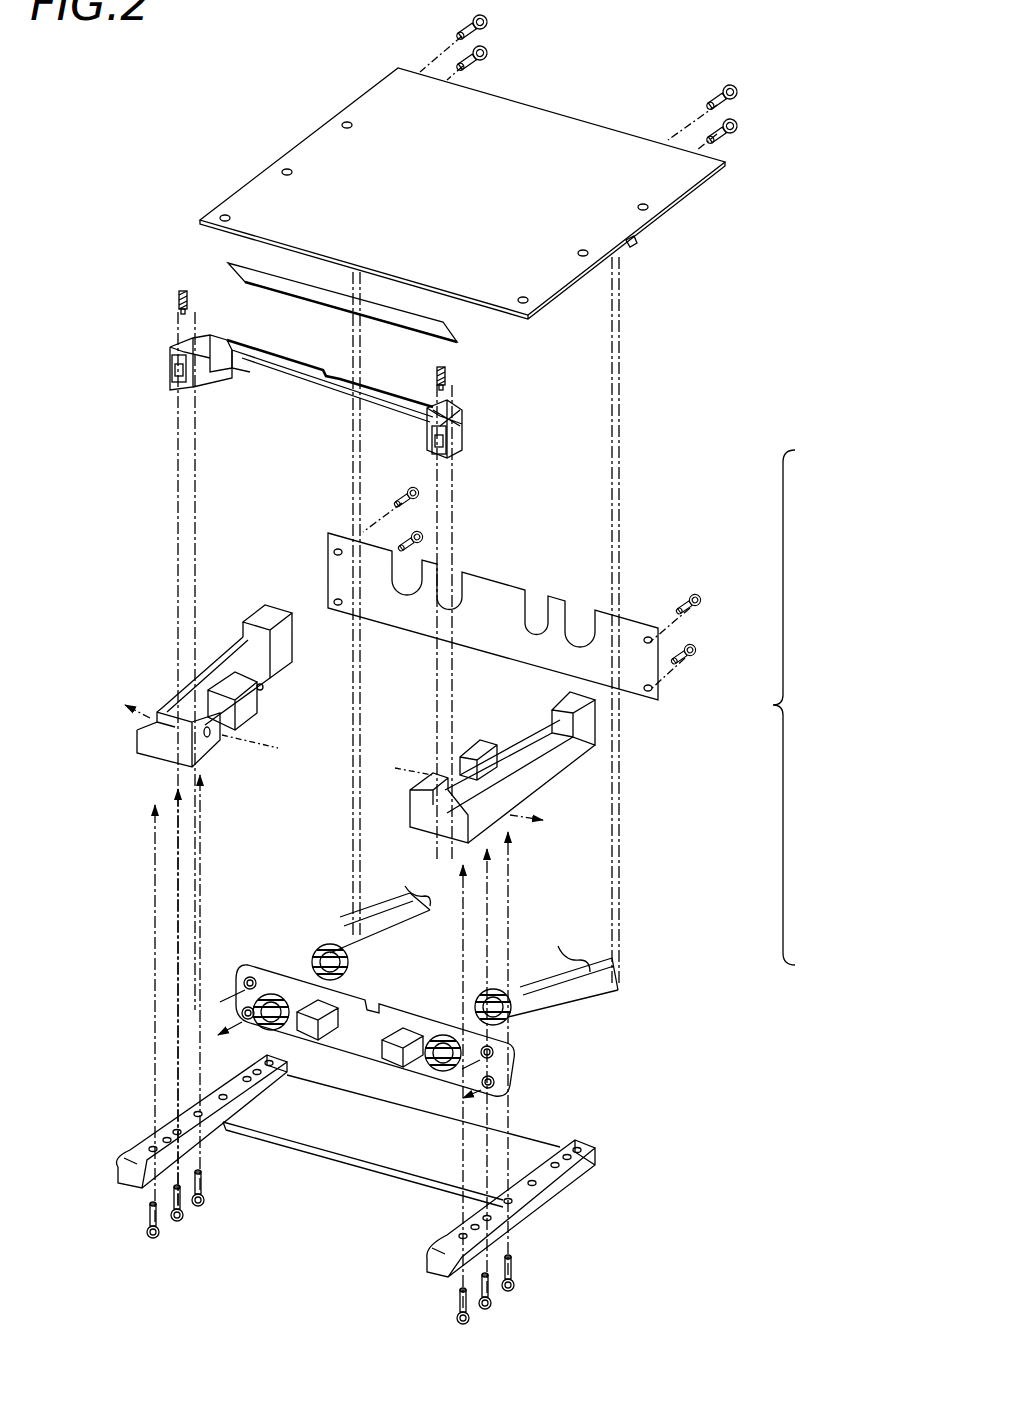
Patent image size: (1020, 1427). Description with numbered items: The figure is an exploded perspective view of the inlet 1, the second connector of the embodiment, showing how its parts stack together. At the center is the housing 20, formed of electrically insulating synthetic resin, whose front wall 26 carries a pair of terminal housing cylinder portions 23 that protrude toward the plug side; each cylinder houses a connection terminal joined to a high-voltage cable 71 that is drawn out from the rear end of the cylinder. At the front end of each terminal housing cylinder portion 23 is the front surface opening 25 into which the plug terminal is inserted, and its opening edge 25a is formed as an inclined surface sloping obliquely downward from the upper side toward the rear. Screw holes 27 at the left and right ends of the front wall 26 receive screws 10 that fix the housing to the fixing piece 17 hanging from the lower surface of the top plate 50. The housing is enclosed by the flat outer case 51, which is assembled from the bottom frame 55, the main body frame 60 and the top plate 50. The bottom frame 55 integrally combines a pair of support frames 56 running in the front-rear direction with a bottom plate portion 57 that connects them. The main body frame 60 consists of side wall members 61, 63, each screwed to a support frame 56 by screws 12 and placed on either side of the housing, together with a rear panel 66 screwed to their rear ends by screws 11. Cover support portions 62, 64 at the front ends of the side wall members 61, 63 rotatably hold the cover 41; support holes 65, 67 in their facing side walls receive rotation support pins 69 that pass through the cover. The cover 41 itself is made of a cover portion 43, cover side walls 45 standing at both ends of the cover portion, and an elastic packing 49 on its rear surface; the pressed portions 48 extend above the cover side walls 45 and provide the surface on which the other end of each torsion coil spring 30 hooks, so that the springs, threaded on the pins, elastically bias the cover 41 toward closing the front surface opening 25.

The inlet 1 is at (150, 152).
The screws 10 is at (465, 30).
The screws 11 is at (406, 488).
The screws 12 is at (146, 1237).
The fixing piece 17 is at (640, 243).
The housing 20 is at (413, 1060).
The terminal housing cylinder portion 23 is at (278, 992).
The front surface opening 25 is at (280, 1033).
The opening edge 25a is at (418, 1070).
The front wall 26 is at (355, 1035).
The screw holes 27 is at (246, 976).
The torsion coil springs 30 is at (176, 300).
The cover 41 is at (317, 401).
The cover portion 43 is at (392, 392).
The cover side walls 45 is at (196, 385).
The pressed portion 48 is at (170, 360).
The elastic packing 49 is at (305, 292).
The top plate 50 is at (652, 262).
The outer case 51 is at (810, 707).
The bottom frame 55 is at (429, 1102).
The support frames 56 is at (145, 1140).
The bottom plate portion 57 is at (530, 1150).
The main body frame 60 is at (650, 755).
The side wall member 61 is at (249, 706).
The cover support portion 62 is at (162, 743).
The side wall member 63 is at (509, 788).
The cover support portion 64 is at (424, 832).
The support hole 65 is at (212, 745).
The rear panel 66 is at (505, 572).
The support hole 67 is at (472, 748).
The rotation support pins 69 is at (282, 748).
The high-voltage cable 71 is at (392, 918).